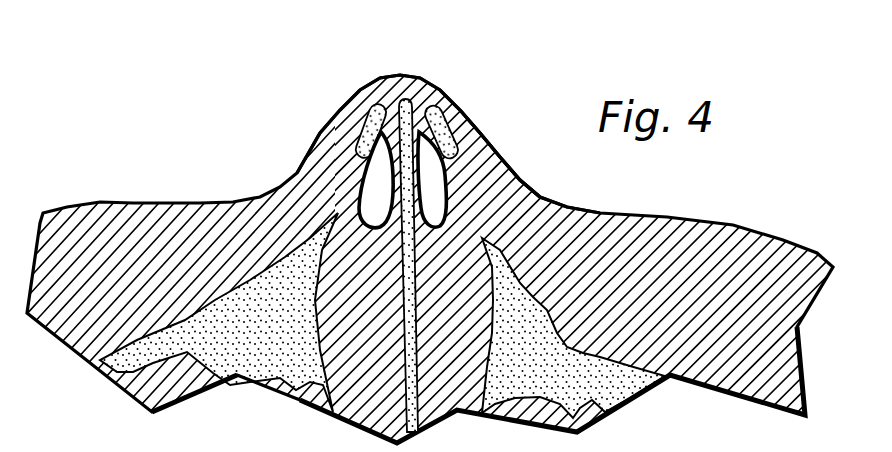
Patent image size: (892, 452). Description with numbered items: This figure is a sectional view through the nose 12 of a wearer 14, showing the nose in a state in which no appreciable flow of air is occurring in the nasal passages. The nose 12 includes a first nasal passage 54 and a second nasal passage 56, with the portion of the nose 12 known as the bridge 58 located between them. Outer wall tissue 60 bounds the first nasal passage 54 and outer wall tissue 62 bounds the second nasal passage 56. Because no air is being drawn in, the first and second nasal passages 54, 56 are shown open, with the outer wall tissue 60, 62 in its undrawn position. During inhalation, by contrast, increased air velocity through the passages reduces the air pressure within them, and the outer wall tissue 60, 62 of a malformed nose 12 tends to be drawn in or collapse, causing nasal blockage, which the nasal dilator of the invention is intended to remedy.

The nose 12 is at (373, 78).
The wearer 14 is at (165, 198).
The first nasal passage 54 is at (373, 186).
The second nasal passage 56 is at (435, 200).
The bridge 58 is at (411, 77).
The outer wall tissue 60 is at (345, 125).
The outer wall tissue 62 is at (500, 153).